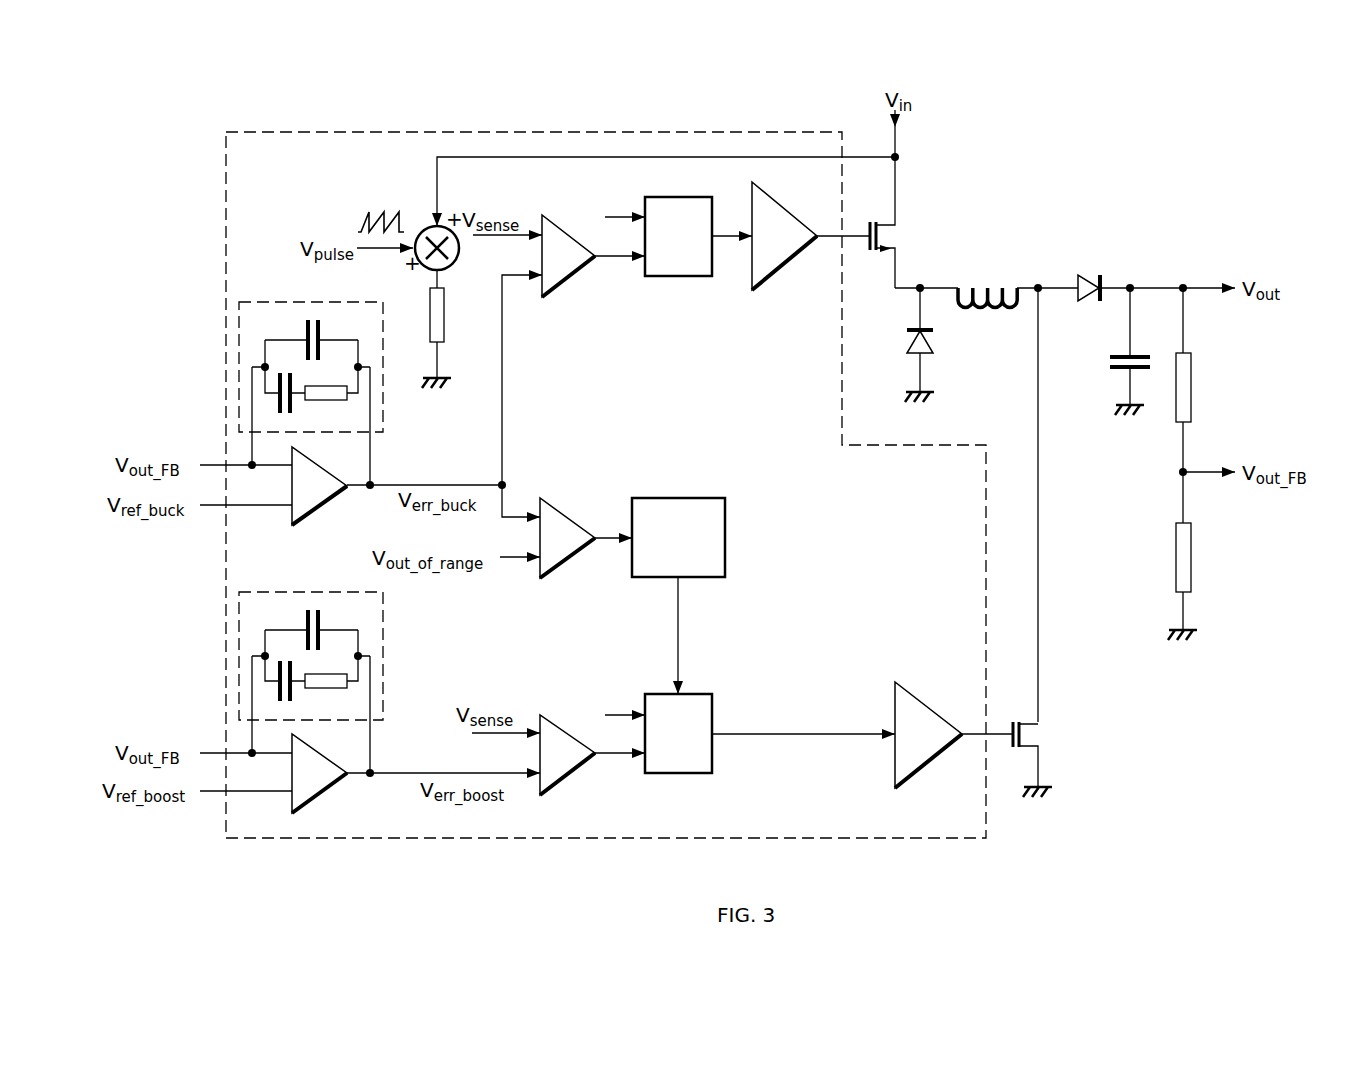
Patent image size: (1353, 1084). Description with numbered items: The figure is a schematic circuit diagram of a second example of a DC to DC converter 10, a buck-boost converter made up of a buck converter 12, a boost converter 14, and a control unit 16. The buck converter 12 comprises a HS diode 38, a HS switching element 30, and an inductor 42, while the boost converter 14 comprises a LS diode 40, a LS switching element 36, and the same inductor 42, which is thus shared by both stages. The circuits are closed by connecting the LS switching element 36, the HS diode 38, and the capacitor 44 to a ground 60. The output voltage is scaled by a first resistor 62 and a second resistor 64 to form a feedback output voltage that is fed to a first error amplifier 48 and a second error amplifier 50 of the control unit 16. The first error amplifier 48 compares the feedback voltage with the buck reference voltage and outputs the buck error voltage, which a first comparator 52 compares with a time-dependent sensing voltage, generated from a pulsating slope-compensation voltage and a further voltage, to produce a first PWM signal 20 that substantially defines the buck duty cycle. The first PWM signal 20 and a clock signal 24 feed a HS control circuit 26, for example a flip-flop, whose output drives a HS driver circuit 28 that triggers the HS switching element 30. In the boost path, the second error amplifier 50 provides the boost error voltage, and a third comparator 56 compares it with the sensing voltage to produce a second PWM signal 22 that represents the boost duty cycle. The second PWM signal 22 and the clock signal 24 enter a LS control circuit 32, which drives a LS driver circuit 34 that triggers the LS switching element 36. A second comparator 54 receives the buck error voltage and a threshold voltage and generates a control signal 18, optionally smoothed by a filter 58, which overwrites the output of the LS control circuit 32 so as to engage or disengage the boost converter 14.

The DC to DC converter 10 is at (609, 889).
The buck converter 12 is at (975, 225).
The boost converter 14 is at (1070, 597).
The control unit 16 is at (226, 210).
The control signal 18 is at (680, 640).
The first PWM signal 20 is at (607, 258).
The second PWM signal 22 is at (607, 755).
The clock signal 24 is at (612, 215).
The HS control circuit 26 is at (666, 250).
The HS driver circuit 28 is at (768, 249).
The HS switching element 30 is at (882, 233).
The LS control circuit 32 is at (666, 747).
The LS driver circuit 34 is at (910, 747).
The LS switching element 36 is at (1025, 735).
The HS diode 38 is at (933, 347).
The LS diode 40 is at (1090, 280).
The inductor 42 is at (984, 284).
The capacitor 44 is at (1142, 348).
The first error amplifier 48 is at (316, 516).
The second error amplifier 50 is at (320, 804).
The first comparator 52 is at (566, 288).
The second comparator 54 is at (568, 512).
The third comparator 56 is at (566, 788).
The filter 58 is at (666, 554).
The ground 60 is at (452, 388).
The first resistor 62 is at (1192, 384).
The second resistor 64 is at (1192, 555).